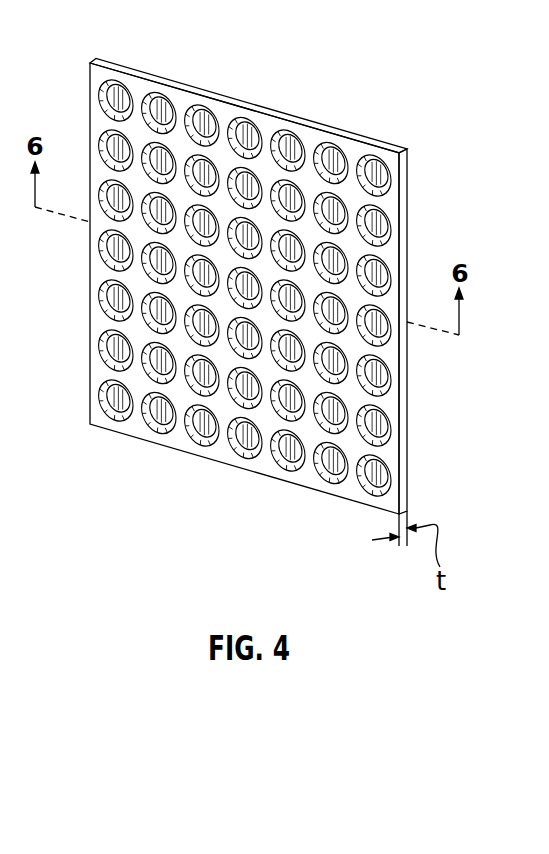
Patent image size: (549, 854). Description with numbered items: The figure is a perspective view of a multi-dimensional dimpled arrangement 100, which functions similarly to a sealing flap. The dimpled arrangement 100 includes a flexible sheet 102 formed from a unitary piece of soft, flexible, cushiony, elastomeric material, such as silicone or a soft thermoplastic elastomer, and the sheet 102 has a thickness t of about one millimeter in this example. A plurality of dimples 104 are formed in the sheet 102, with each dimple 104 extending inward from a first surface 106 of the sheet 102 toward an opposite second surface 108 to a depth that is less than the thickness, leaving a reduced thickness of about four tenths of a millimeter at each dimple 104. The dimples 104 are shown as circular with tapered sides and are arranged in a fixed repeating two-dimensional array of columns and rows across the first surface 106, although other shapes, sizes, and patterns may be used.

The dimpled arrangement 100 is at (350, 63).
The flexible sheet 102 is at (402, 202).
The dimple 104 is at (324, 474).
The first surface 106 is at (177, 93).
The second surface 108 is at (416, 243).